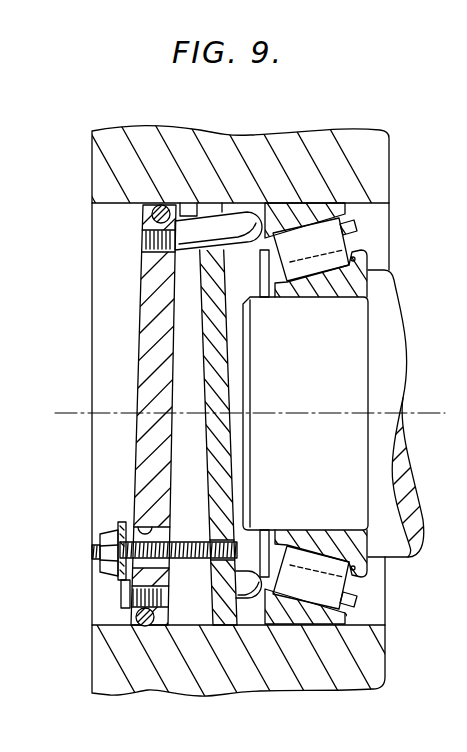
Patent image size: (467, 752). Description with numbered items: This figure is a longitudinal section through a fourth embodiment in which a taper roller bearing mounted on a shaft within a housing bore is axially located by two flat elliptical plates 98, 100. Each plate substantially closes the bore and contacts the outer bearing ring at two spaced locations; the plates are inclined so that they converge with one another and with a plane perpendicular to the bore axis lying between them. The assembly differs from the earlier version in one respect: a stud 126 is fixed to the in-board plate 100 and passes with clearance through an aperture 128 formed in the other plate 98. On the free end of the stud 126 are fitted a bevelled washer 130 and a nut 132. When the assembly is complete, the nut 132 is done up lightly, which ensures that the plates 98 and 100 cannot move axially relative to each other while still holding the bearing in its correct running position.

The flat elliptical plate 98 is at (152, 268).
The in-board flat elliptical plate 100 is at (170, 415).
The stud 126 is at (230, 508).
The aperture 128 is at (145, 531).
The bevelled washer 130 is at (108, 575).
The nut 132 is at (102, 534).